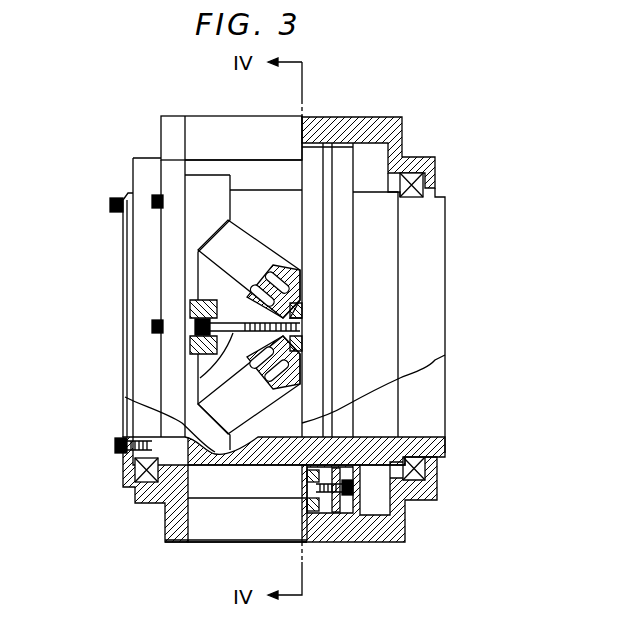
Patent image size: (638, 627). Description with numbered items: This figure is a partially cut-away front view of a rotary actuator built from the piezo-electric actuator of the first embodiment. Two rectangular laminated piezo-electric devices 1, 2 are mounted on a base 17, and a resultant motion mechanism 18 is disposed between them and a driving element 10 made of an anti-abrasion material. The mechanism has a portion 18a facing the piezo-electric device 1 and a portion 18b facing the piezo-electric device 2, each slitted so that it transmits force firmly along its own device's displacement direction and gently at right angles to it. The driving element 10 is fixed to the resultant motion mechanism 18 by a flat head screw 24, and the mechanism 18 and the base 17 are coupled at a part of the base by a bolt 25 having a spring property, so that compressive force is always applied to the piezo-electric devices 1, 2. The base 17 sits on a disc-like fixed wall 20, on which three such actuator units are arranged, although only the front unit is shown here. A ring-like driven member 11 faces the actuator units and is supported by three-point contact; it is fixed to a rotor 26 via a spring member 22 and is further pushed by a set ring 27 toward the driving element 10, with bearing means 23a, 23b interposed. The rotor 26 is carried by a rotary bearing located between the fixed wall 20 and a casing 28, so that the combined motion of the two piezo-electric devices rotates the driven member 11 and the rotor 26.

The piezo-electric device 1 is at (241, 243).
The piezo-electric device 2 is at (243, 415).
The driving element 10 is at (302, 307).
The driven member 11 is at (320, 512).
The base 17 is at (229, 178).
The resultant motion mechanism 18 is at (298, 282).
The portion of resultant motion mechanism 18a is at (276, 260).
The portion of resultant motion mechanism 18b is at (242, 412).
The fixed wall 20 is at (168, 527).
The spring member 22 is at (336, 496).
The bearing means 23a is at (140, 476).
The bearing means 23b is at (425, 468).
The flat head screw 24 is at (302, 322).
The bolt 25 is at (200, 378).
The rotor 26 is at (430, 441).
The set ring 27 is at (132, 452).
The casing 28 is at (405, 528).